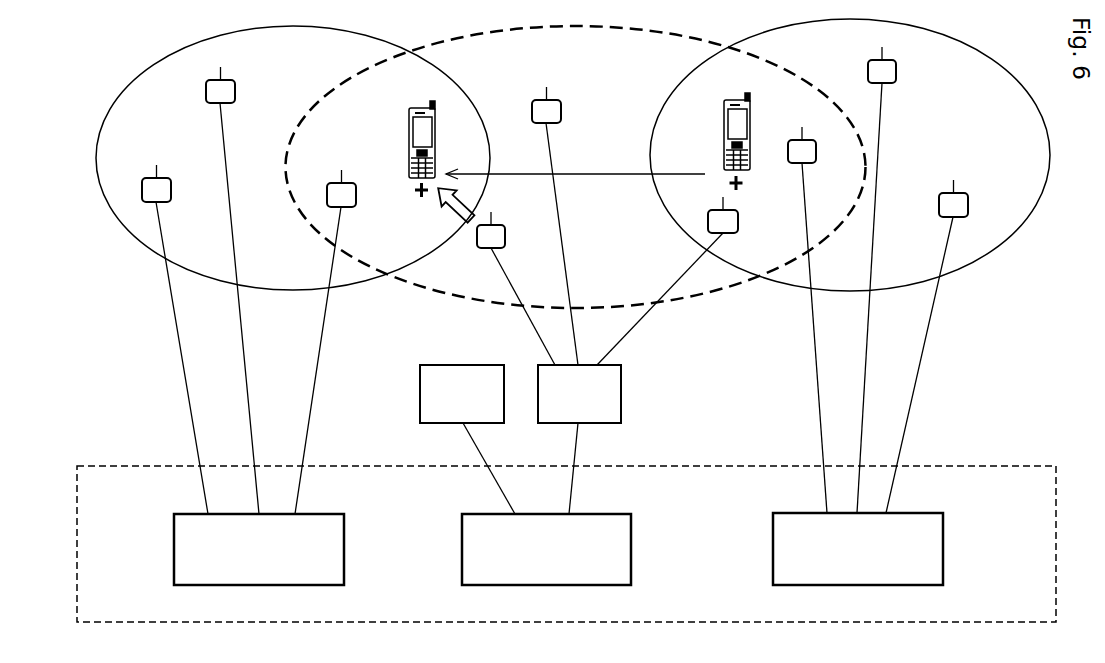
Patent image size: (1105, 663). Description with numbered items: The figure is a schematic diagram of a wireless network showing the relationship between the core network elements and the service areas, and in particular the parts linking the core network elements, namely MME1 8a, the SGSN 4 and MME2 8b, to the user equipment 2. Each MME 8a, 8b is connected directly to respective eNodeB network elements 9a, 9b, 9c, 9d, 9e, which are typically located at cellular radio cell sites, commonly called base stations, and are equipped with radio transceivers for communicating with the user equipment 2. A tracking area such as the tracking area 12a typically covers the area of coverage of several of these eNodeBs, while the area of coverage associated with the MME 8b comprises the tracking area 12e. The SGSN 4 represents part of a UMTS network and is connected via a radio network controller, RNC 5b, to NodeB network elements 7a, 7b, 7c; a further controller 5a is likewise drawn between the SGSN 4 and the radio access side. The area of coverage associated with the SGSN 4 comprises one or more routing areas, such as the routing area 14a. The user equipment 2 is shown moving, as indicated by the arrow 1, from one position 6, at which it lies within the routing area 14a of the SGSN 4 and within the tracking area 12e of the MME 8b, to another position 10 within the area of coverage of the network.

The movement of mobile terminal 1 is at (446, 210).
The user equipment 2 is at (409, 135).
The SGSN 4 is at (632, 551).
The radio network controller 5a is at (420, 392).
The RNC 5b is at (621, 392).
The position 6 is at (744, 184).
The NodeB network element 7a is at (562, 112).
The NodeB network element 7b is at (505, 238).
The base station 7c is at (738, 225).
The MME 8a is at (345, 551).
The MME 8b is at (944, 551).
The eNodeB network element 9a is at (171, 192).
The eNodeB network element 9b is at (235, 90).
The eNodeB network element 9c is at (356, 195).
The eNodeB network element 9d is at (896, 73).
The eNodeB network element 9e is at (968, 204).
The position 10 is at (414, 194).
The tracking area 12a is at (167, 56).
The tracking area 12e is at (980, 51).
The routing area 14a is at (869, 345).